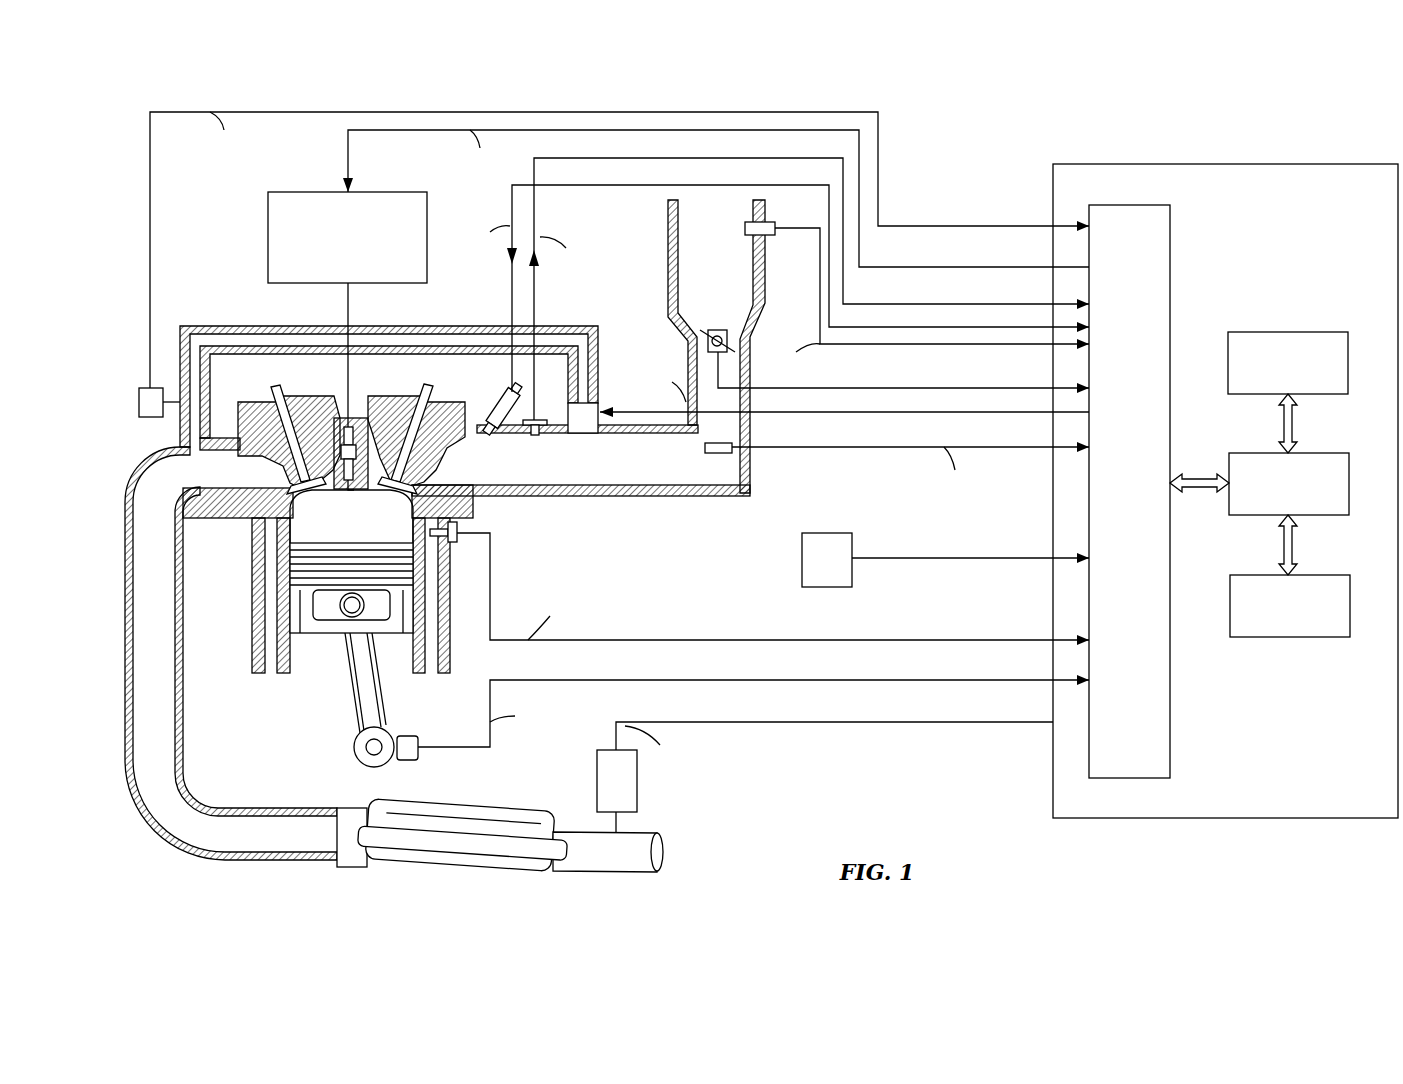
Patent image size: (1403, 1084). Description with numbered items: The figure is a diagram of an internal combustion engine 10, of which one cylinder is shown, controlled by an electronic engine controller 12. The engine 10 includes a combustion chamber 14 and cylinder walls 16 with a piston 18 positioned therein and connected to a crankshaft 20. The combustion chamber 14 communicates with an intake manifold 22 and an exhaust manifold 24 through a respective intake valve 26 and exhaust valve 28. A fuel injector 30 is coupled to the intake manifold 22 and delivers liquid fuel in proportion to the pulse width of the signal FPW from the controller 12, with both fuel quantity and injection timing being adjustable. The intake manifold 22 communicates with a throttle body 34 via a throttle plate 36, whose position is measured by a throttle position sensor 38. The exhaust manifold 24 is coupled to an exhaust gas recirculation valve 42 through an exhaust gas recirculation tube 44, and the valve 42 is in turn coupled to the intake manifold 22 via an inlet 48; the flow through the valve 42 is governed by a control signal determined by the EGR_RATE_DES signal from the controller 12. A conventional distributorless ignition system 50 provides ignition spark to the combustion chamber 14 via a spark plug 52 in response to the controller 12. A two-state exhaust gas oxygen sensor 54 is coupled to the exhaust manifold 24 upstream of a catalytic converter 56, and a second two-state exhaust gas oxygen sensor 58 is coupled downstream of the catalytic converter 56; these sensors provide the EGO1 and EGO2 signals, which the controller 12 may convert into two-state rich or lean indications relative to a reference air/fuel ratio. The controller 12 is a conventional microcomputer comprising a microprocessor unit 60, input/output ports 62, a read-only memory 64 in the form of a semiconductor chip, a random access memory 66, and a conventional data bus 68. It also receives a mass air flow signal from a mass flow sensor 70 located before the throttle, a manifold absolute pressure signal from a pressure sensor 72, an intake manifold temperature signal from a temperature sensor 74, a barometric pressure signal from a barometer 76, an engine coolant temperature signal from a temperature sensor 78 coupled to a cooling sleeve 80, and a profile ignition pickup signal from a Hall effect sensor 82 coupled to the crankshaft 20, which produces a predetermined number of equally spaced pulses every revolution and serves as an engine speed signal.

The internal combustion engine 10 is at (1006, 133).
The electronic engine controller 12 is at (1315, 164).
The combustion chamber 14 is at (300, 527).
The cylinder walls 16 is at (292, 676).
The piston 18 is at (316, 630).
The crankshaft 20 is at (355, 754).
The intake manifold 22 is at (552, 477).
The exhaust manifold 24 is at (140, 460).
The intake valve 26 is at (412, 480).
The exhaust valve 28 is at (285, 482).
The fuel injector 30 is at (498, 398).
The throttle body 34 is at (703, 232).
The throttle plate 36 is at (709, 330).
The throttle position sensor 38 is at (720, 330).
The exhaust gas recirculation valve 42 is at (575, 436).
The EGR pipe 44 is at (424, 326).
The inlet 48 is at (598, 434).
The distributorless ignition system 50 is at (385, 192).
The spark plug 52 is at (355, 427).
The two-state exhaust gas oxygen sensor 54 is at (147, 385).
The catalytic converter 56 is at (476, 808).
The two-state exhaust gas oxygen sensor 58 is at (597, 772).
The microprocessor unit 60 is at (1323, 453).
The input/output ports 62 is at (1172, 218).
The read-only memory 64 is at (1312, 332).
The random access memory 66 is at (1323, 575).
The data bus 68 is at (1197, 474).
The mass flow sensor 70 is at (770, 240).
The pressure sensor 72 is at (533, 436).
The temperature sensor 74 is at (705, 448).
The barometer 76 is at (802, 560).
The temperature sensor 78 is at (457, 542).
The cooling sleeve 80 is at (432, 676).
The Hall effect sensor 82 is at (410, 760).